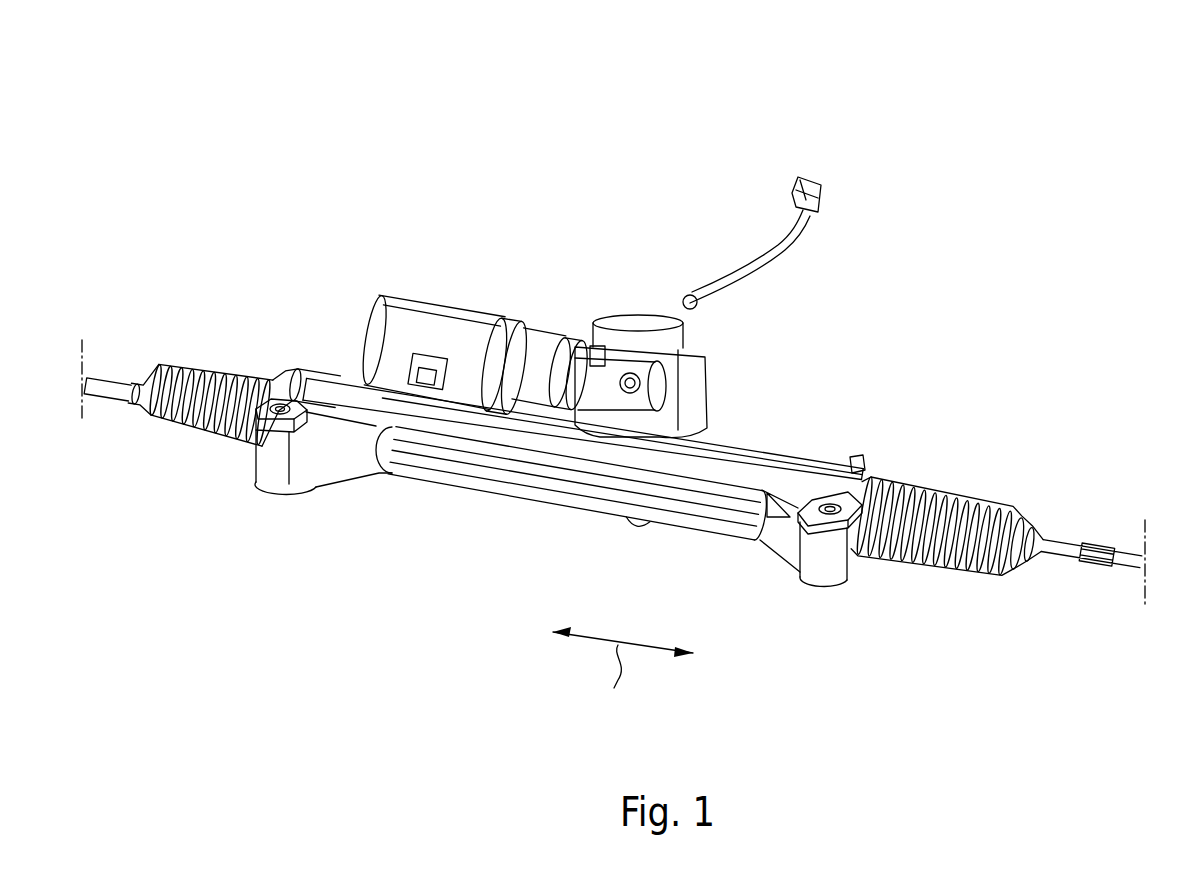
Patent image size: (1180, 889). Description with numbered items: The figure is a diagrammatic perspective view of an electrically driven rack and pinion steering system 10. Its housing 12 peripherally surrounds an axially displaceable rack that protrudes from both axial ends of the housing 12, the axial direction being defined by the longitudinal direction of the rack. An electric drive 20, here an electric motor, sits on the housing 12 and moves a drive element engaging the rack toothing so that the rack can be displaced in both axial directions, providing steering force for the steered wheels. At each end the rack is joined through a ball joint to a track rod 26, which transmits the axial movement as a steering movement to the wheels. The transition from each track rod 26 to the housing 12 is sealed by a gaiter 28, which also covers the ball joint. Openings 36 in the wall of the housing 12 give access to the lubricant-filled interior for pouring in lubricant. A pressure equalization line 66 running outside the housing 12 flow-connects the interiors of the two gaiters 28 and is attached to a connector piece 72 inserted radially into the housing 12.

The rack and pinion steering system 10 is at (176, 130).
The housing 12 is at (735, 470).
The electric drive 20 is at (320, 378).
The track rod 26 is at (100, 383).
The gaiter 28 is at (205, 362).
The openings 36 is at (396, 403).
The pressure equalization line 66 is at (720, 440).
The connector piece 72 is at (852, 462).